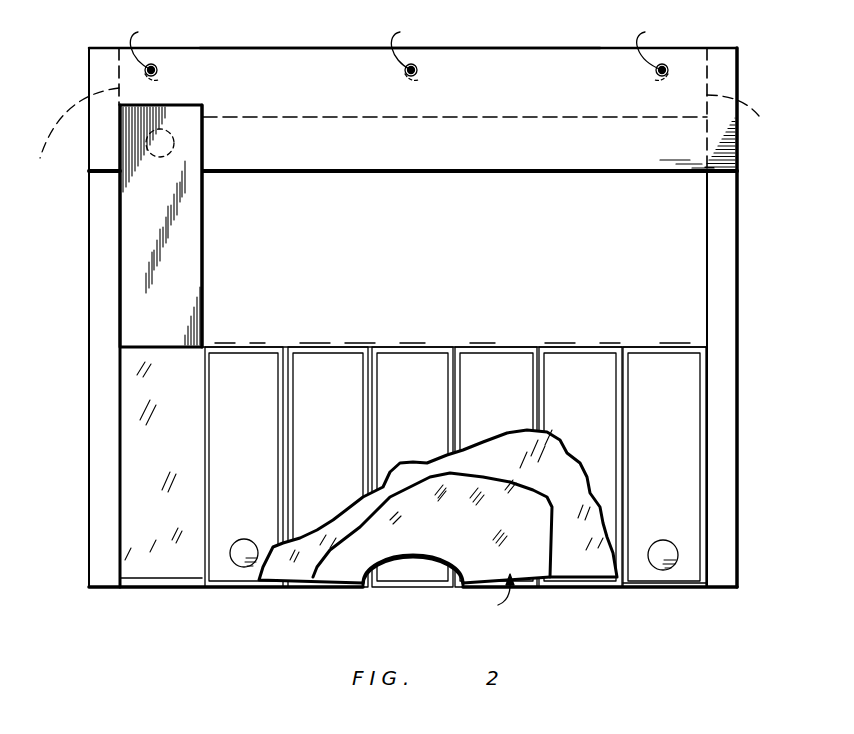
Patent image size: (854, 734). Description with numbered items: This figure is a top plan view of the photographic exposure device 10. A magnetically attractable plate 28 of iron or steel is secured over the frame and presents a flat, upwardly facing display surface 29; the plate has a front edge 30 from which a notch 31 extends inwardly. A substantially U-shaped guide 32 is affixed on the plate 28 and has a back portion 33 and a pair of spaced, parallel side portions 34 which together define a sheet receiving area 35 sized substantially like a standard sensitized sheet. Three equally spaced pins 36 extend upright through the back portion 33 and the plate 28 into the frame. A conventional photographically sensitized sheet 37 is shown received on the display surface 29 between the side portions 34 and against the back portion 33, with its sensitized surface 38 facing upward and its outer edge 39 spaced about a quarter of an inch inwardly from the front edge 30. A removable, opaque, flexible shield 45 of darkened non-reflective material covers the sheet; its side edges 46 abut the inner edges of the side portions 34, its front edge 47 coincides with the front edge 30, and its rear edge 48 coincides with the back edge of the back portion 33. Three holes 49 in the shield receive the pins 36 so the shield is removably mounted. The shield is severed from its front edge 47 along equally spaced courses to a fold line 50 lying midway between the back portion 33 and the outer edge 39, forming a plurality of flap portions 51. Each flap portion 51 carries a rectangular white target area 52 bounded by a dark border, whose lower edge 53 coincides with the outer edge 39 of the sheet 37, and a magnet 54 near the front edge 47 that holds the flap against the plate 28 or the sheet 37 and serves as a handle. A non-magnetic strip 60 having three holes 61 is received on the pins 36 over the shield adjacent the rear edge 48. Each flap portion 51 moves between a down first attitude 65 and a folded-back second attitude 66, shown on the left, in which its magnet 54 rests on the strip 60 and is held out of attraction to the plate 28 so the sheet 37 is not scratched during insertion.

The device 10 is at (803, 108).
The magnetically attractable plate 28 is at (491, 599).
The display surface 29 is at (460, 538).
The front edge 30 is at (160, 588).
The notch 31 is at (402, 562).
The U-shaped guide 32 is at (105, 396).
The back portion 33 is at (310, 117).
The side portions 34 is at (108, 308).
The sheet receiving area 35 is at (130, 560).
The pins 36 is at (158, 70).
The photographically sensitized sheet 37 is at (147, 507).
The photographically sensitized surface 38 is at (176, 460).
The outer edge 39 is at (131, 578).
The shield 45 is at (411, 295).
The side edges 46 is at (120, 210).
The front edge 47 is at (222, 588).
The rear edge 48 is at (283, 48).
The holes 49 is at (153, 76).
The fold line 50 is at (515, 345).
The flap portions 51 is at (171, 312).
The target area 52 is at (300, 372).
The lower edge 53 is at (637, 583).
The magnet 54 is at (168, 157).
The strip 60 is at (536, 95).
The holes 61 is at (400, 48).
The first attitude 65 is at (317, 457).
The second attitude 66 is at (203, 262).